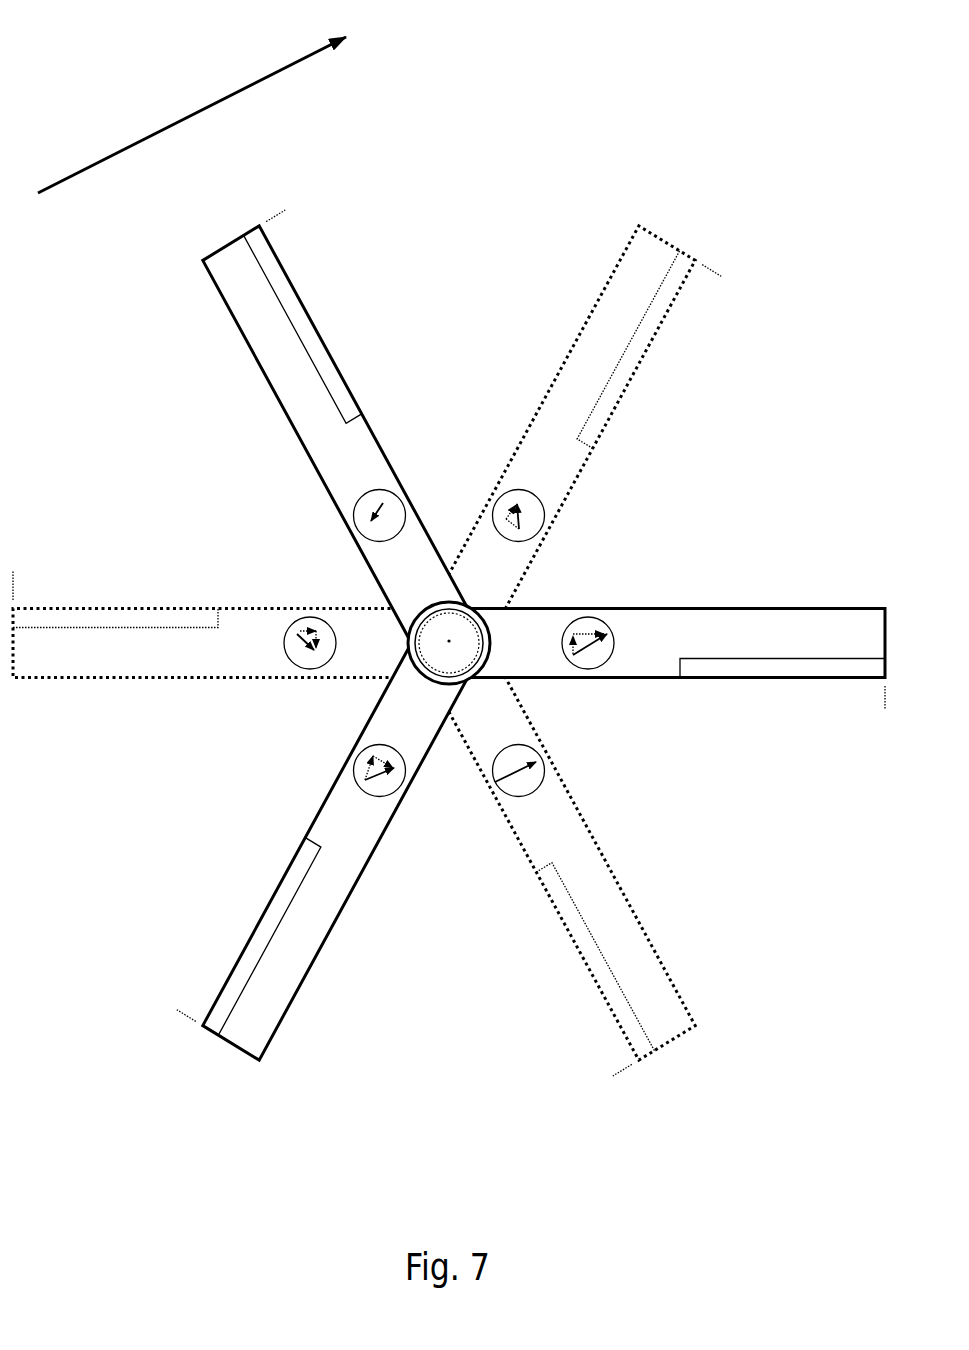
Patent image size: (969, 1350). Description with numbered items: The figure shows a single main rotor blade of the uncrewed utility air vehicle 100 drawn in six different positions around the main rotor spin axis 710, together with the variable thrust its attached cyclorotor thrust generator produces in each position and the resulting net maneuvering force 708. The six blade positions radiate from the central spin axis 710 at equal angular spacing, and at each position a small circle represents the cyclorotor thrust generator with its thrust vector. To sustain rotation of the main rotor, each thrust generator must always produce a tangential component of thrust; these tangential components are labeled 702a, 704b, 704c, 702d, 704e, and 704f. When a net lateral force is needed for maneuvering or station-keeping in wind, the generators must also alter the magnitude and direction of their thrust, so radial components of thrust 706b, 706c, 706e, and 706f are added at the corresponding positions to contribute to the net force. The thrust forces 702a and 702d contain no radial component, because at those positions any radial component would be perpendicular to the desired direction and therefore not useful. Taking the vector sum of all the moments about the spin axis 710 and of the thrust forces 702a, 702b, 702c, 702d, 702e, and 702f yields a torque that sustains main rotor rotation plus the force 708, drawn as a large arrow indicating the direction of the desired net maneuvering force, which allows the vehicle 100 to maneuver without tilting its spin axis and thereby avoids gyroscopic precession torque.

The uncrewed utility air vehicle 100 is at (208, 241).
The thrust force 702a is at (378, 503).
The thrust force 702b is at (287, 631).
The thrust force 702c is at (344, 802).
The thrust force 702d is at (520, 779).
The thrust force 702e is at (616, 654).
The thrust force 702f is at (565, 474).
The tangential component of thrust 704b is at (322, 642).
The tangential component of thrust 704c is at (390, 755).
The tangential component of thrust 704e is at (568, 640).
The tangential component of thrust 704f is at (508, 532).
The radial component of thrust 706b is at (302, 628).
The radial component of thrust 706c is at (364, 766).
The radial component of thrust 706e is at (587, 625).
The radial component of thrust 706f is at (503, 508).
The net maneuvering force 708 is at (202, 117).
The spin axis 710 is at (451, 652).